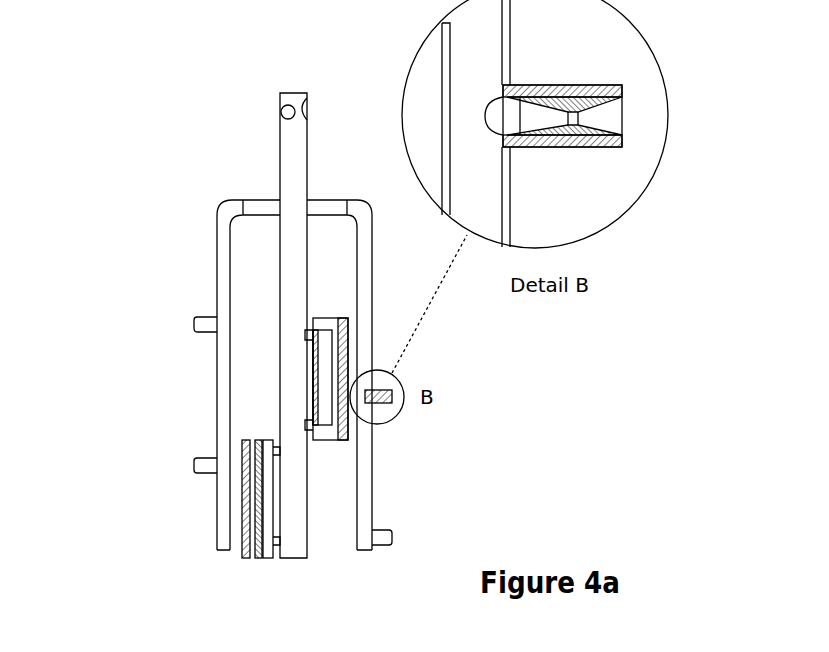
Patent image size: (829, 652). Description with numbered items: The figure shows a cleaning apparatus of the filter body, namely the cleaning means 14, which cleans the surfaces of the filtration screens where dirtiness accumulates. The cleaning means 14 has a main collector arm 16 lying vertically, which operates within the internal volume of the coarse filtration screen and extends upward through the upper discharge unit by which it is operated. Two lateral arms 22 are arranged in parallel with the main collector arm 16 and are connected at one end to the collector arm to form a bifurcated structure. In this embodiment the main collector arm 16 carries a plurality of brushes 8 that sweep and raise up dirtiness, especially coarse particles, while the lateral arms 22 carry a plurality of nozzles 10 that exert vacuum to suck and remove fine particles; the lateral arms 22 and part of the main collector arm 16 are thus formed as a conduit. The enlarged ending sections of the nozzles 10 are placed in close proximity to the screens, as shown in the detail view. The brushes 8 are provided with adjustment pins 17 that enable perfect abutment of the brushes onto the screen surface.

The brushes 8 is at (242, 535).
The nozzles 10 is at (192, 466).
The cleaning means 14 is at (223, 168).
The main collector arm 16 is at (292, 160).
The adjustment pins 17 is at (315, 427).
The lateral arms 22 is at (222, 280).